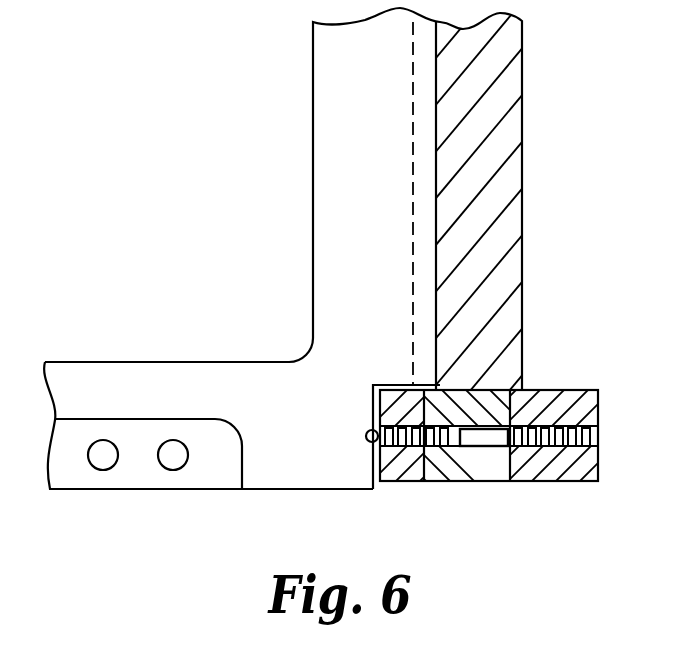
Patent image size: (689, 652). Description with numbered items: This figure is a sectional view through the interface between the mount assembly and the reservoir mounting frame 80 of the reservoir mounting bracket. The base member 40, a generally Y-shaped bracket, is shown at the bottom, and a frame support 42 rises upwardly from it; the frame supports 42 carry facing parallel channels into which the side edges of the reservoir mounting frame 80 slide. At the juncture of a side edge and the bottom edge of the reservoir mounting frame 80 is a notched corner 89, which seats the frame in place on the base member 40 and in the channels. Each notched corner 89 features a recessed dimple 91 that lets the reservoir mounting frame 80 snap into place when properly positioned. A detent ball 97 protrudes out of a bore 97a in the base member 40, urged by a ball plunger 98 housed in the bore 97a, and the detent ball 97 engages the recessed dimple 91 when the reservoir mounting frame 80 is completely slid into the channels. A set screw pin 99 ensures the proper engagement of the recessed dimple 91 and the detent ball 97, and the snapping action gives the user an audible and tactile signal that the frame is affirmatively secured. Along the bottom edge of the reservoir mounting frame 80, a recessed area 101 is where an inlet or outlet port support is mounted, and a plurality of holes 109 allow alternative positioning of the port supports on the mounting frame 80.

The base member 40 is at (500, 482).
The frame supports 42 is at (517, 128).
The reservoir mounting frame 80 is at (313, 136).
The notched corners 89 is at (371, 402).
The recessed dimple 91 is at (367, 432).
The detent ball 97 is at (372, 445).
The bore 97a is at (424, 475).
The ball plunger 98 is at (397, 427).
The set screw pin 99 is at (485, 447).
The recessed area 101 is at (67, 483).
The holes 109 is at (163, 460).